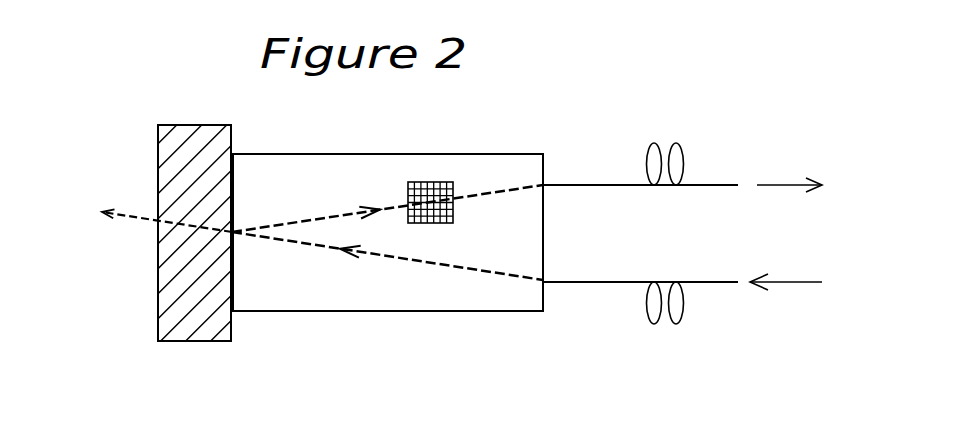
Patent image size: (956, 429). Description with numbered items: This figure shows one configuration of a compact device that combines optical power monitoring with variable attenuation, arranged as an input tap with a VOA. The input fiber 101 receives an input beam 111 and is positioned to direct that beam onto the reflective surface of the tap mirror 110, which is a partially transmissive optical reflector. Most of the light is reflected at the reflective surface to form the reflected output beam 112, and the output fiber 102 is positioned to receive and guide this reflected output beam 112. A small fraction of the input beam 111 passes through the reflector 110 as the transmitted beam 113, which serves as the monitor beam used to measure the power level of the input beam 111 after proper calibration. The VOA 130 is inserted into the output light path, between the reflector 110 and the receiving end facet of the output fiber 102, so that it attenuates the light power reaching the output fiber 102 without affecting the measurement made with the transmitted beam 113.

The input fiber 101 is at (565, 282).
The output fiber 102 is at (565, 185).
The tap mirror 110 is at (235, 288).
The input beam 111 is at (786, 268).
The reflected output beam 112 is at (789, 171).
The transmitted beam 113 is at (128, 212).
The VOA 130 is at (423, 182).